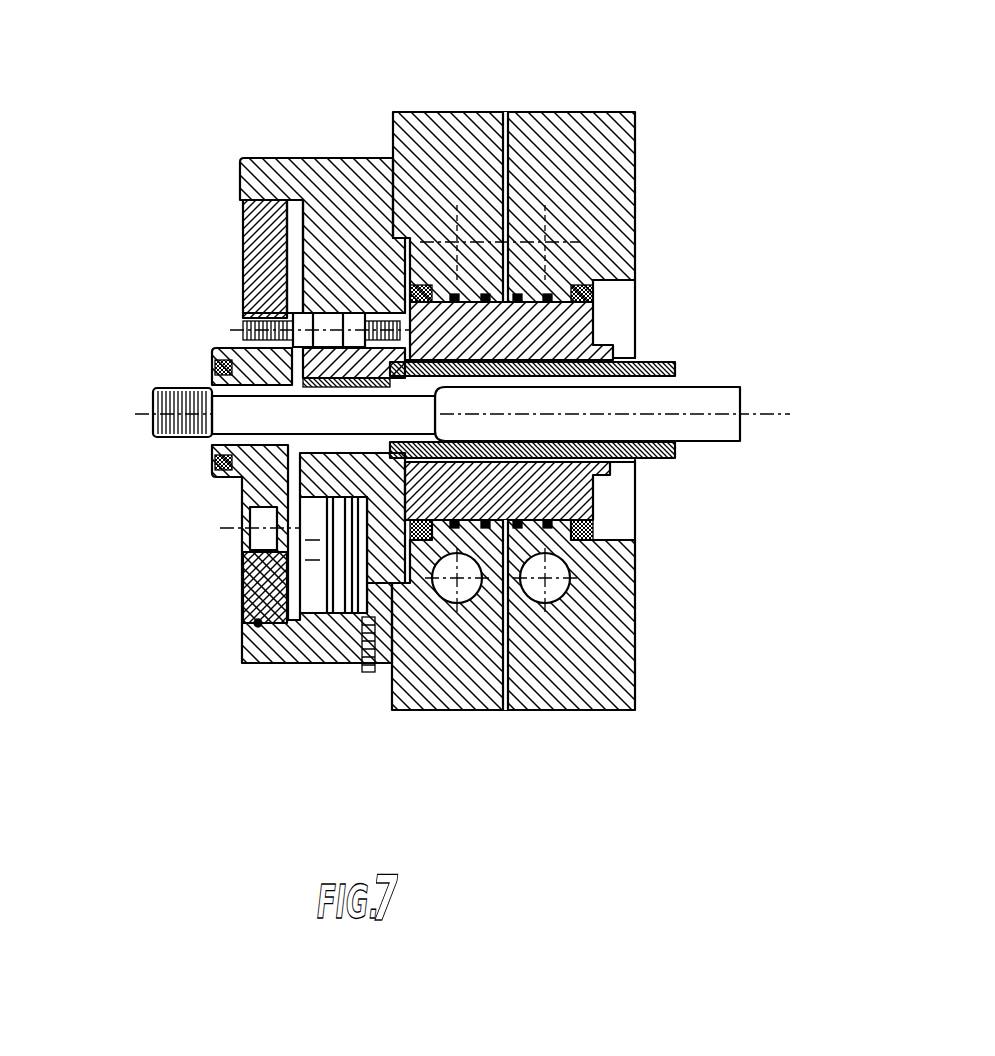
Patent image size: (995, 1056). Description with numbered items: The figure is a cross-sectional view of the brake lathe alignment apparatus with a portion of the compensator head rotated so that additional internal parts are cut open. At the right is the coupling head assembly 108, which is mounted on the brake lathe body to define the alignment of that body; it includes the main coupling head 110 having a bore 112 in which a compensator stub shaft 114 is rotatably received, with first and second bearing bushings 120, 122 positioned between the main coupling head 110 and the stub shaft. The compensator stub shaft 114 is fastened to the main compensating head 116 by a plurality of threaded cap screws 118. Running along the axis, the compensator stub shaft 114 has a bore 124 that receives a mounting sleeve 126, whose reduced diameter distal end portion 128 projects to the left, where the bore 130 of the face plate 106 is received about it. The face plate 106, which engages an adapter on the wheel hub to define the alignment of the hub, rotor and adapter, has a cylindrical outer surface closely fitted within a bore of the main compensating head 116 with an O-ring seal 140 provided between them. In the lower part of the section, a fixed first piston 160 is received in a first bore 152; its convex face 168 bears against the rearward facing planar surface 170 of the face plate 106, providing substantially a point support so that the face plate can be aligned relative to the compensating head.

The face plate 106 is at (255, 261).
The coupling head assembly 108 is at (635, 140).
The main coupling head 110 is at (515, 712).
The bore 112 is at (593, 490).
The compensator stub shaft 114 is at (593, 507).
The main compensating head 116 is at (322, 670).
The threaded cap screws 118 is at (353, 315).
The first bearing bushing 120 is at (413, 540).
The second bearing bushing 122 is at (583, 543).
The bore 124 is at (540, 377).
The mounting sleeve 126 is at (660, 360).
The reduced diameter distal end portion 128 is at (247, 448).
The bore 130 is at (153, 428).
The O-ring seal 140 is at (258, 625).
The first bore 152 is at (310, 613).
The fixed first piston 160 is at (307, 570).
The convex face 168 is at (292, 520).
The rearward facing planar surface 170 is at (293, 233).